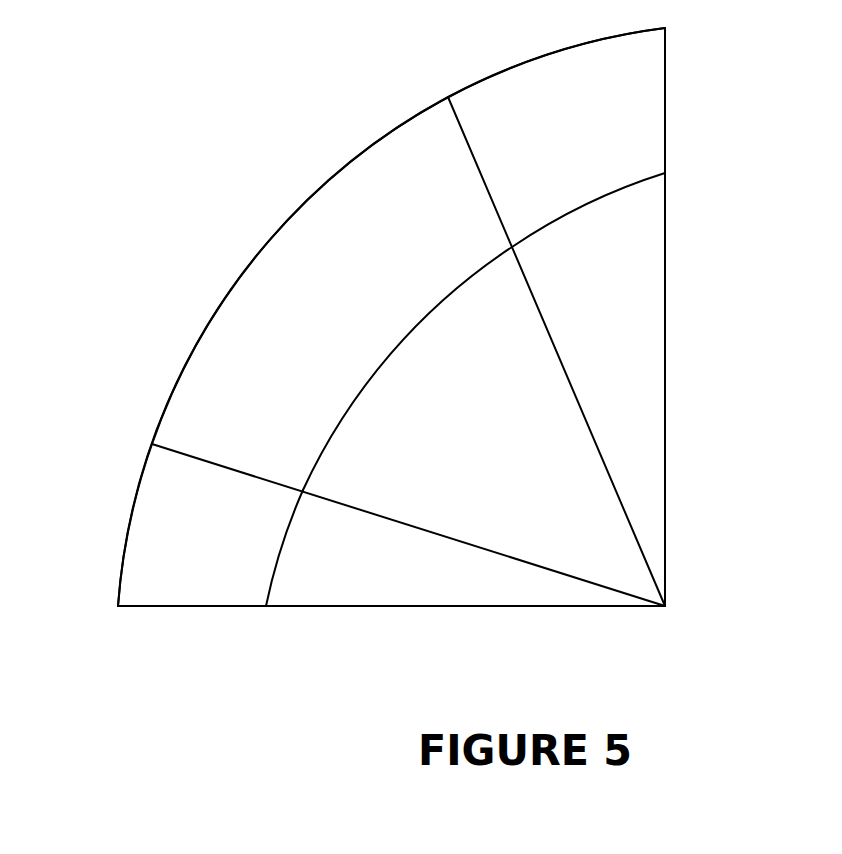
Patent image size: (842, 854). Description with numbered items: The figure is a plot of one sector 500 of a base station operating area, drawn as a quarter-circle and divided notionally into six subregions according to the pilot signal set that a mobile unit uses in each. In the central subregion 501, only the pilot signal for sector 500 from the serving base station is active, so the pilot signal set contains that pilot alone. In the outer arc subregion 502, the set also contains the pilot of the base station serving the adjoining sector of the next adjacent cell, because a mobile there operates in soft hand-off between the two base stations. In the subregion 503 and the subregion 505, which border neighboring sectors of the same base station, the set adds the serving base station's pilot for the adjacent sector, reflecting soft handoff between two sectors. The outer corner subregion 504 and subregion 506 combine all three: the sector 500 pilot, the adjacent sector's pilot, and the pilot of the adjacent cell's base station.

The sector 500 is at (724, 160).
The subregion 501 is at (484, 351).
The subregion 502 is at (300, 270).
The subregion 503 is at (408, 525).
The subregion 504 is at (192, 525).
The subregion 505 is at (588, 219).
The subregion 506 is at (556, 100).